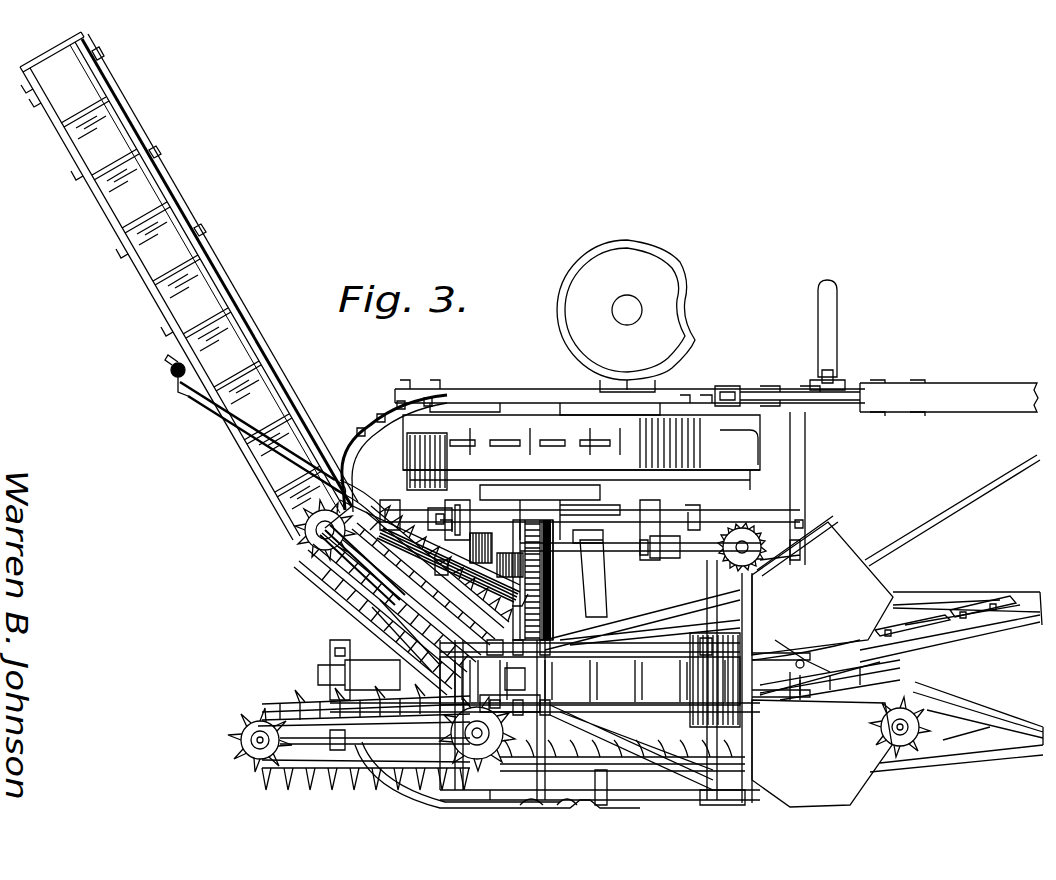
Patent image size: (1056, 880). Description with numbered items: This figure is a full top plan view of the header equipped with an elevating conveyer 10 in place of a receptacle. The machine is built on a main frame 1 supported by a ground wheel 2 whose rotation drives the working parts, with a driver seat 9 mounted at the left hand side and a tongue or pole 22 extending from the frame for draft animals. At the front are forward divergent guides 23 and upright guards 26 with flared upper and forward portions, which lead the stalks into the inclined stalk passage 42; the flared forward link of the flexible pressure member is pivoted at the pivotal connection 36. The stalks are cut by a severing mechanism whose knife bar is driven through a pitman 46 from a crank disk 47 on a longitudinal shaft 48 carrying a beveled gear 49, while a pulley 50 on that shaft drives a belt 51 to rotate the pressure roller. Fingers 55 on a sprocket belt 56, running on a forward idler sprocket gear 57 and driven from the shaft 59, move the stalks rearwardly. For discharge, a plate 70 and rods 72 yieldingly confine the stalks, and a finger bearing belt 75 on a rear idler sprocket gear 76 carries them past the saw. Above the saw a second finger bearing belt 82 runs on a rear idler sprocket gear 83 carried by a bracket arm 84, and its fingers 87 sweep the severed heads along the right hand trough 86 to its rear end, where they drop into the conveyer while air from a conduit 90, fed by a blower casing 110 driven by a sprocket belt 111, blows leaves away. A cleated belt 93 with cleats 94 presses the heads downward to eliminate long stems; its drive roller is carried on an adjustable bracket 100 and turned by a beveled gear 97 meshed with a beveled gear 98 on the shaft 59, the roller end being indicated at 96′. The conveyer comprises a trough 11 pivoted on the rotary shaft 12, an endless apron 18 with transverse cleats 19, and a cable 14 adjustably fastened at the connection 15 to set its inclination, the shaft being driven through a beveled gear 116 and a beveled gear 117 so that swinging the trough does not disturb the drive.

The main frame 1 is at (450, 392).
The ground wheel 2 is at (470, 442).
The driver seat 9 is at (565, 303).
The elevating conveyer 10 is at (229, 260).
The trough 11 is at (186, 196).
The rotary shaft 12 is at (320, 676).
The cable 14 is at (262, 437).
The adjustable connection 15 is at (510, 678).
The endless apron 18 is at (143, 221).
The transverse cleats 19 is at (152, 250).
The tongue or pole 22 is at (960, 382).
The forward divergent guides 23 is at (1000, 730).
The upright guards 26 is at (822, 661).
The pivotal connection 36 is at (802, 660).
The stalk passage 42 is at (800, 693).
The pitman 46 is at (820, 530).
The crank disk 47 is at (745, 527).
The longitudinal shaft 48 is at (640, 530).
The beveled gear 49 is at (455, 534).
The pulley 50 is at (560, 580).
The belt 51 is at (604, 572).
The fingers 55 is at (910, 688).
The sprocket belt 56 is at (876, 706).
The forward idler sprocket gear 57 is at (920, 738).
The shaft 59 is at (500, 776).
The plate 70 is at (322, 728).
The rods 72 is at (300, 706).
The finger bearing belt 75 is at (336, 782).
The rear idler sprocket gear 76 is at (257, 720).
The finger bearing belt 82 is at (378, 607).
The rear idler sprocket gear 83 is at (305, 529).
The bracket arm 84 is at (315, 545).
The right hand trough 86 is at (378, 525).
The fingers 87 is at (385, 510).
The conduit 90 is at (430, 518).
The belt 93 is at (630, 664).
The cleats 94 is at (590, 693).
The guide 96′ is at (727, 640).
The beveled gear 97 is at (477, 734).
The beveled gear 98 is at (472, 740).
The bracket 100 is at (525, 690).
The blower casing 110 is at (530, 540).
The sprocket belt 111 is at (575, 548).
The beveled gear 116 is at (345, 585).
The beveled gear 117 is at (340, 570).